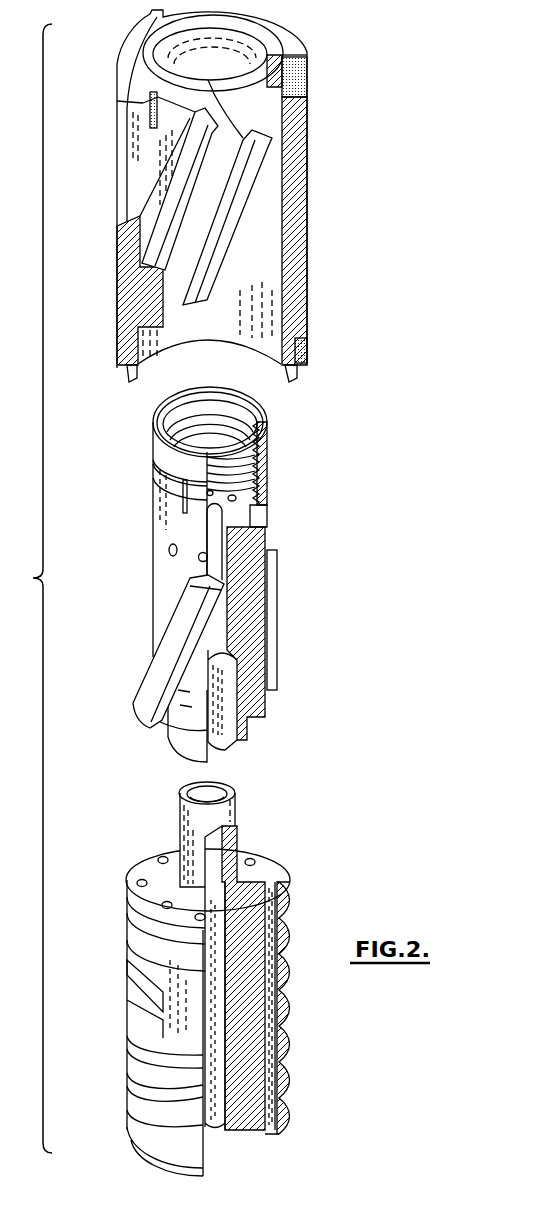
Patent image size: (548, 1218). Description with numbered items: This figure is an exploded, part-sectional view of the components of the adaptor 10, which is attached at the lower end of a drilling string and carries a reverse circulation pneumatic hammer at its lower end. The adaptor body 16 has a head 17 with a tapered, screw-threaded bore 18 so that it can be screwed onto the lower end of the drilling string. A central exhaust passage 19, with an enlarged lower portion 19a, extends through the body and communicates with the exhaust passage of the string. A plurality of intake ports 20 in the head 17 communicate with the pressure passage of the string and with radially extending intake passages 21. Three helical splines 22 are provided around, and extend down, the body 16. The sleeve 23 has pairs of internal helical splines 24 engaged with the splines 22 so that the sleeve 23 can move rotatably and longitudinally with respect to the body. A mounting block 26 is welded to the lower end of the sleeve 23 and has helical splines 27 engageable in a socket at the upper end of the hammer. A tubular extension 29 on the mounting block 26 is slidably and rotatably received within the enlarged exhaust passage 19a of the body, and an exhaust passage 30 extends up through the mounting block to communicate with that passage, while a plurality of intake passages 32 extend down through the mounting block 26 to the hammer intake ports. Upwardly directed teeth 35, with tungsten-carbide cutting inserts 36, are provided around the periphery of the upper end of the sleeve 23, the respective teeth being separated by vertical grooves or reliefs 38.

The adaptor 10 is at (462, 507).
The adaptor body 16 is at (317, 571).
The head 17 is at (268, 447).
The tapered, screw-threaded bore 18 is at (247, 412).
The central exhaust passage 19 is at (255, 504).
The enlarged lower portion 19a is at (226, 732).
The intake ports 20 is at (258, 477).
The intake passages 21 is at (240, 516).
The helical splines 22 is at (278, 661).
The sleeve 23 is at (362, 232).
The internal helical splines 24 is at (273, 143).
The mounting block 26 is at (345, 875).
The helical splines 27 is at (289, 1064).
The tubular extension 29 is at (180, 812).
The exhaust passage 30 is at (238, 795).
The intake passages 32 is at (272, 881).
The upwardly directed teeth 35 is at (167, 125).
The tungsten-carbide cutting inserts 36 is at (307, 68).
The vertical grooves or reliefs 38 is at (222, 13).